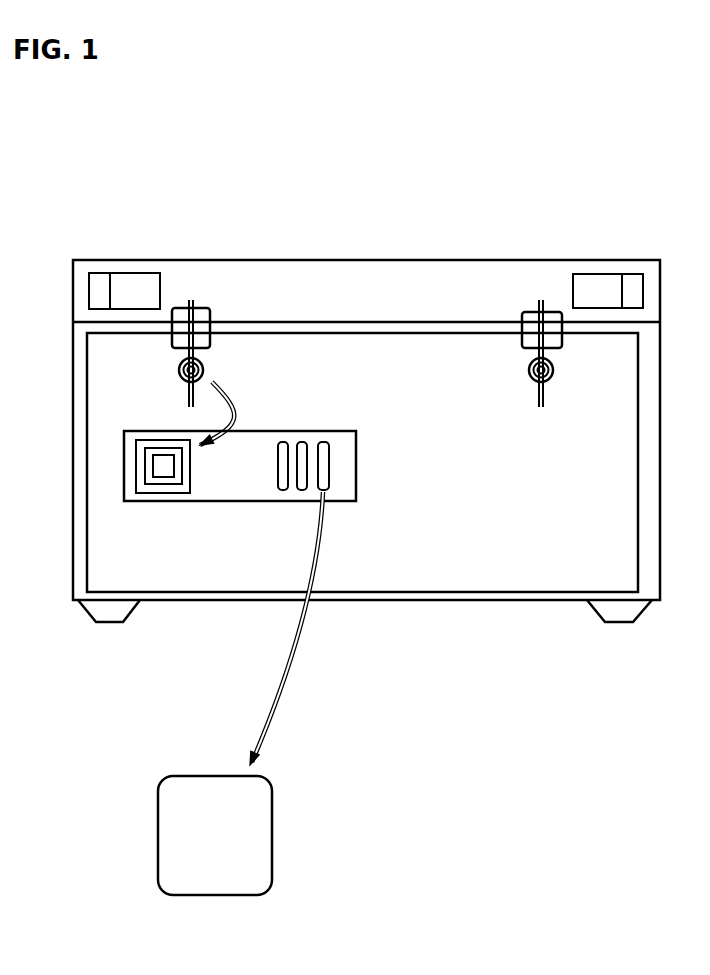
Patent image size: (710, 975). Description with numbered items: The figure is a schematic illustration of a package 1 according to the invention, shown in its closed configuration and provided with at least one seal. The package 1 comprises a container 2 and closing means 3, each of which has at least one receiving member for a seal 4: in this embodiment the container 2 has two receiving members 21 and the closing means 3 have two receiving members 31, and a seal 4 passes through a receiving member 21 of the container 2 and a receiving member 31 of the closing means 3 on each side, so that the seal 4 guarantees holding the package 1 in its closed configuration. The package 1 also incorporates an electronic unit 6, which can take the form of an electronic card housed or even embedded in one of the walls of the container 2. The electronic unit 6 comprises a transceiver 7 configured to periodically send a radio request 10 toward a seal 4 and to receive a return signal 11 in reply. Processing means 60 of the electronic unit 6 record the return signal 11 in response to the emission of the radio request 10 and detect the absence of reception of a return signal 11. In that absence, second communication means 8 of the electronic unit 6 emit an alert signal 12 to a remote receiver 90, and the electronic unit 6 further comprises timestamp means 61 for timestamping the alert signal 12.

The package 1 is at (366, 523).
The container 2 is at (492, 600).
The closing means 3 is at (260, 274).
The seal 4 is at (207, 363).
The electronic unit 6 is at (252, 562).
The transceiver 7 is at (205, 492).
The second communication means 8 is at (322, 486).
The radio request 10 is at (366, 292).
The return signal 11 is at (240, 403).
The alert signal 12 is at (287, 696).
The receiving member 21 is at (407, 278).
The receiving member 31 is at (175, 308).
The processing means 60 is at (283, 480).
The timestamp means 61 is at (298, 484).
The remote receiver 90 is at (272, 808).